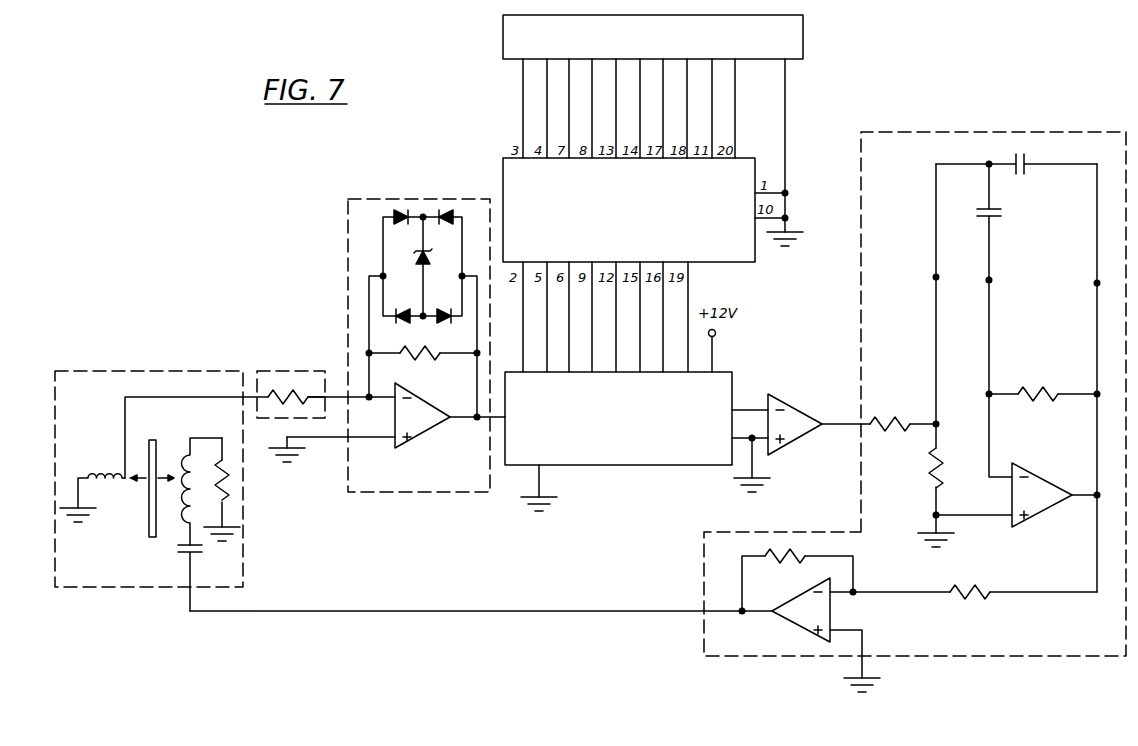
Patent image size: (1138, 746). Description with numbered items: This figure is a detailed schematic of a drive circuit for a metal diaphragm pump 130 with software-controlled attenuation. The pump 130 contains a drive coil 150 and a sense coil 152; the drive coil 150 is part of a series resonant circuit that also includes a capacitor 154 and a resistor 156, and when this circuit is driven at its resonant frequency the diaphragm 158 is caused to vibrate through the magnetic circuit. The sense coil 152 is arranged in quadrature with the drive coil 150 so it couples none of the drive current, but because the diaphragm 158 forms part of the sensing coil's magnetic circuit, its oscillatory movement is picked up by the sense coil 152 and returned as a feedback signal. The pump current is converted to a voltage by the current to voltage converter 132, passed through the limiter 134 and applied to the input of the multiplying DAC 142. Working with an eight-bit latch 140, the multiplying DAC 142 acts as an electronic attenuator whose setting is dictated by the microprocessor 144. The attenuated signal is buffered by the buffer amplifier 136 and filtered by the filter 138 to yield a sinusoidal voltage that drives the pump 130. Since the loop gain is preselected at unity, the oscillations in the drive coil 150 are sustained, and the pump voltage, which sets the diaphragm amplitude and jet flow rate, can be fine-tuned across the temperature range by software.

The pump 130 is at (175, 467).
The current to voltage converter 132 is at (307, 371).
The limiter 134 is at (432, 199).
The buffer amplifier 136 is at (790, 402).
The filter 138 is at (1040, 132).
The latch SN54LS373 140 is at (743, 262).
The multiplying DAC 142 is at (643, 465).
The microprocessor 144 is at (808, 38).
The drive coil 150 is at (185, 455).
The sense coil 152 is at (105, 470).
The capacitor 154 is at (183, 553).
The resistor 156 is at (227, 480).
The diaphragm 158 is at (148, 518).